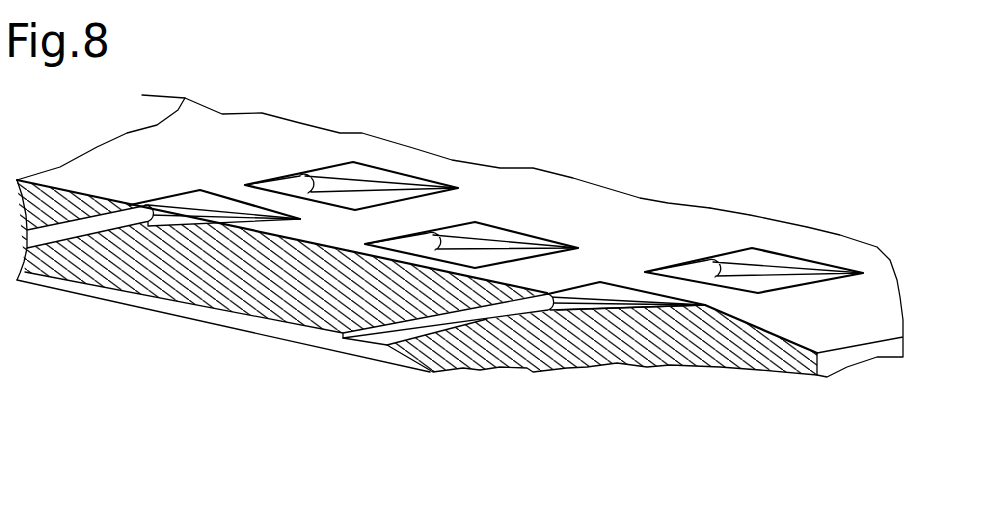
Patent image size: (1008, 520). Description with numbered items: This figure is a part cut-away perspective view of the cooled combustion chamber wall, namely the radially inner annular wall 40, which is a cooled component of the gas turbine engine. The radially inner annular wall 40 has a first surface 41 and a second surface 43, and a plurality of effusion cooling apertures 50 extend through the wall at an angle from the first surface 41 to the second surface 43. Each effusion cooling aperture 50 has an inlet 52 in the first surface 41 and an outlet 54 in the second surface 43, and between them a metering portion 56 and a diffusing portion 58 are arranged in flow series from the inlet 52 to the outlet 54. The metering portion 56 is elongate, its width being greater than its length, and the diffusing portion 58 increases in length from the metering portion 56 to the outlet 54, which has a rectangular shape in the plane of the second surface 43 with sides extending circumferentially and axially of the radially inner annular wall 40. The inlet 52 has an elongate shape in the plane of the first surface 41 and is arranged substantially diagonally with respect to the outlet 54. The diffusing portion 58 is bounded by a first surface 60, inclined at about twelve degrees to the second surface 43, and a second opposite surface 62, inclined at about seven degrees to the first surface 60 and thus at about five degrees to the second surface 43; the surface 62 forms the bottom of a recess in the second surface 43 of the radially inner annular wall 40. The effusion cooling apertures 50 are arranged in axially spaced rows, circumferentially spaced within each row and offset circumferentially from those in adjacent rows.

The radially inner annular wall 40 is at (567, 195).
The first surface 41 is at (257, 322).
The second surface 43 is at (643, 213).
The effusion cooling aperture 50 is at (80, 232).
The inlet 52 is at (373, 338).
The outlet 54 is at (348, 178).
The metering portion 56 is at (105, 228).
The diffusing portion 58 is at (300, 176).
The first surface of the diffusing portion 60 is at (550, 300).
The second opposite surface of the diffusing portion 62 is at (588, 317).